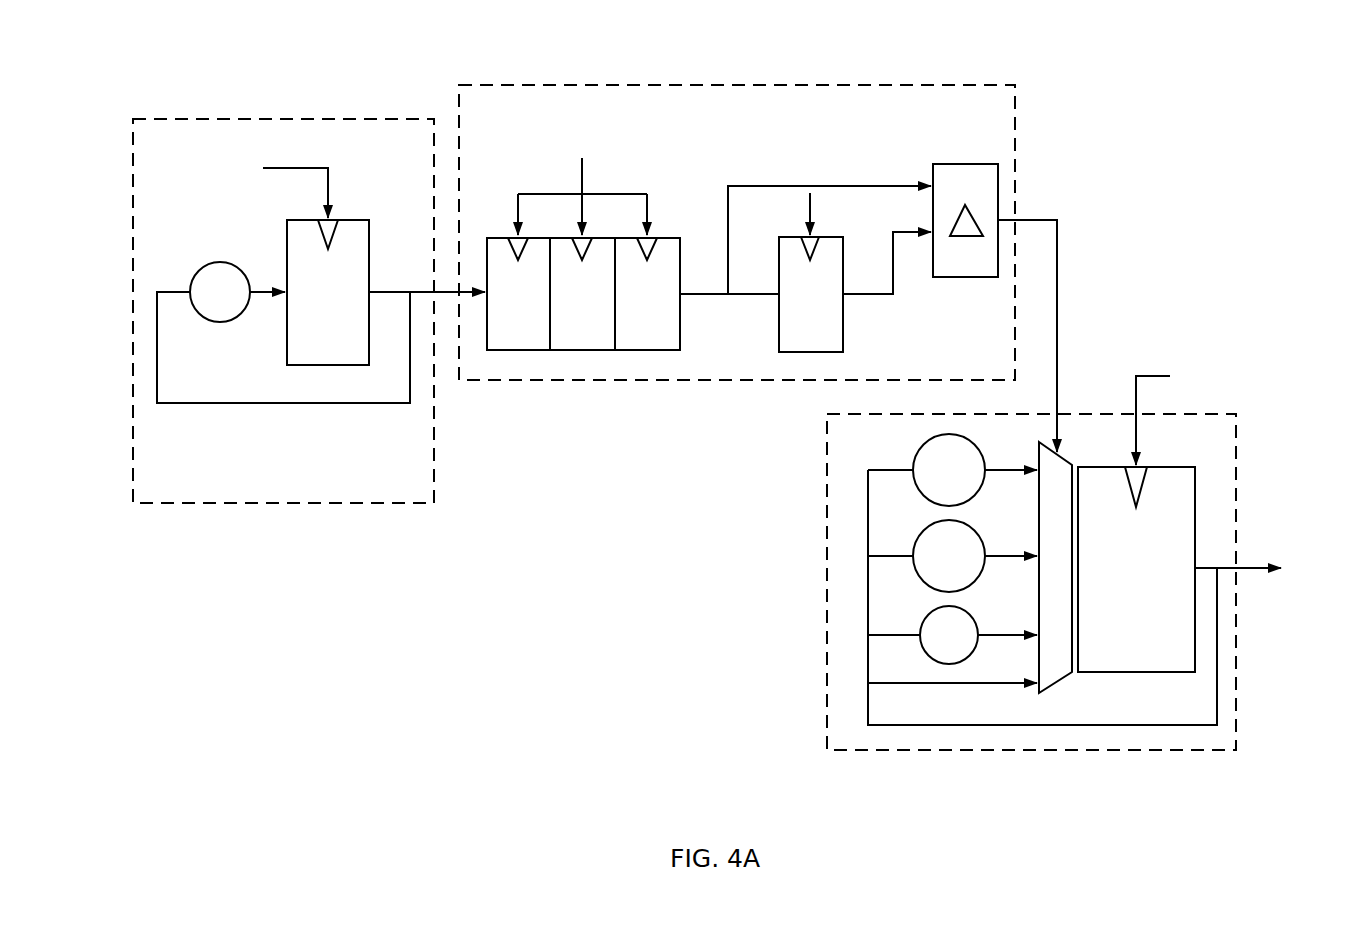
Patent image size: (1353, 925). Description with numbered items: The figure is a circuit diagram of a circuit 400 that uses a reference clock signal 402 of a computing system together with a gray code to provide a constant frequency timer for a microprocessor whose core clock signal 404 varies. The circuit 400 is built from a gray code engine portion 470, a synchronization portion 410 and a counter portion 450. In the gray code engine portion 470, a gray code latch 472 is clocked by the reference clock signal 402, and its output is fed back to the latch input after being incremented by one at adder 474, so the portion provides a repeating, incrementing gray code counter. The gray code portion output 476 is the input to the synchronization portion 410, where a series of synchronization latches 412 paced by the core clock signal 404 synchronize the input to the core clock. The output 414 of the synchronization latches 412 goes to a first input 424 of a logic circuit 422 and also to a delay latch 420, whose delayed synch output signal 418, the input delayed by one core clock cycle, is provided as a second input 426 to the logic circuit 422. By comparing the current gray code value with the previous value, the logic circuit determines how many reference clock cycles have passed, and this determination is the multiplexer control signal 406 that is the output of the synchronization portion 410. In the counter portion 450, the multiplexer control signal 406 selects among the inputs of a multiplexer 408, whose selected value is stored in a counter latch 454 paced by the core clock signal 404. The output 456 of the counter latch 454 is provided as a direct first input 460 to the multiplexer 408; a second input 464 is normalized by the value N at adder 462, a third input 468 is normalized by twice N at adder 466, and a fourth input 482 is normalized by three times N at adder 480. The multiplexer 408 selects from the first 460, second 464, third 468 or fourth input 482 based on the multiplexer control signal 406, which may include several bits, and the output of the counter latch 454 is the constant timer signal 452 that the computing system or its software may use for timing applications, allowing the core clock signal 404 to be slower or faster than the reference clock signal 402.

The circuit 400 is at (462, 591).
The reference clock signal 402 is at (282, 167).
The core clock signal 404 is at (608, 192).
The multiplexer control signal 406 is at (1057, 246).
The multiplexer 408 is at (1060, 681).
The synchronization portion 410 is at (935, 85).
The synchronization latches 412 is at (650, 350).
The output of the synchronization latches 414 is at (735, 297).
The delayed synch output signal 418 is at (888, 297).
The delay latch 420 is at (812, 294).
The logic circuit 422 is at (965, 221).
The first input 424 is at (853, 234).
The second input 426 is at (933, 229).
The counter portion 450 is at (1105, 752).
The constant timer signal 452 is at (1243, 570).
The counter latch 454 is at (1136, 569).
The output of the counter latch 456 is at (1184, 573).
The first input 460 is at (1036, 688).
The adder 462 is at (929, 613).
The second input 464 is at (1036, 640).
The adder 466 is at (926, 556).
The third input 468 is at (1035, 560).
The gray code engine portion 470 is at (342, 119).
The gray code latch 472 is at (328, 292).
The adder 474 is at (224, 263).
The gray code portion output 476 is at (431, 292).
The adder 480 is at (926, 470).
The fourth input 482 is at (1036, 475).